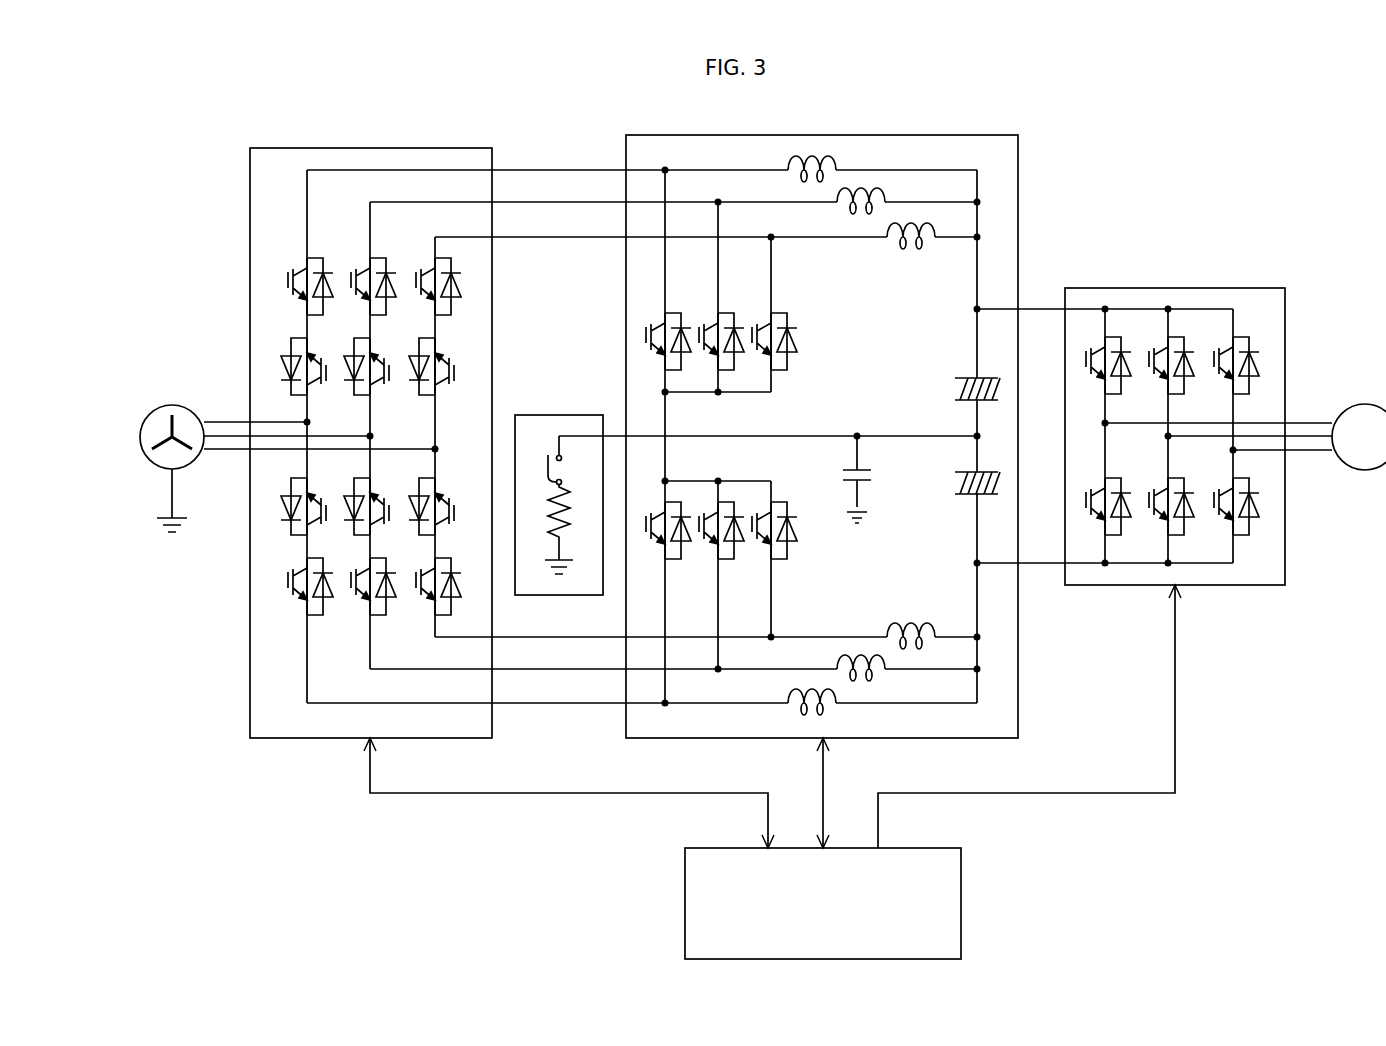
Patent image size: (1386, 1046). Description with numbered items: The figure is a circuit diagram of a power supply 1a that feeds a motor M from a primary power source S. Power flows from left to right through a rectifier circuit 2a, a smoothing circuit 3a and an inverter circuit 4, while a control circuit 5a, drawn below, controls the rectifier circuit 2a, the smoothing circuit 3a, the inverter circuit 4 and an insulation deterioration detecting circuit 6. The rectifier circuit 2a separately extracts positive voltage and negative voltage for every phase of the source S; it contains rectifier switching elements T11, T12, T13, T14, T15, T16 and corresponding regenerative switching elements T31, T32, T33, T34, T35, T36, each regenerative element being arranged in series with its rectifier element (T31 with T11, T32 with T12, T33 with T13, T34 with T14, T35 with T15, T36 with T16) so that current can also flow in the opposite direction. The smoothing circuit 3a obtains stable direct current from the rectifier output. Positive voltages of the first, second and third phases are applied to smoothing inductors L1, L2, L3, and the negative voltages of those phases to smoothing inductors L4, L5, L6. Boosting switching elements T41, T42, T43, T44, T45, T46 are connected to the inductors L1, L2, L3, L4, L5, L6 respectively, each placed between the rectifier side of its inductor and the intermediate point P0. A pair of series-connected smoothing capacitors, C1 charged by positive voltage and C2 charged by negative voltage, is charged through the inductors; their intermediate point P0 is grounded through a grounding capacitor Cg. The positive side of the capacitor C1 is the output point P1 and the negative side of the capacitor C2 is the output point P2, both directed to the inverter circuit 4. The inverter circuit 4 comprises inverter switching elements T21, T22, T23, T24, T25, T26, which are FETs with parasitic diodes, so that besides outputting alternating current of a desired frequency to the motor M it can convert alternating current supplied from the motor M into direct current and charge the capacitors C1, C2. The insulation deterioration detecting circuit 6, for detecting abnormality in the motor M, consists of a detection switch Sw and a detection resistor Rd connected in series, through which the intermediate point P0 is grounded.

The power supply 1a is at (1172, 173).
The rectifier circuit 2a is at (496, 156).
The smoothing circuit 3a is at (1022, 152).
The inverter circuit 4 is at (1259, 286).
The control circuit 5a is at (963, 888).
The insulation deterioration detecting circuit 6 is at (564, 413).
The primary power source S is at (170, 405).
The motor M is at (1362, 405).
The detection switch Sw is at (546, 466).
The detection resistor Rd is at (554, 520).
The rectifier switching element T11 is at (326, 381).
The rectifier switching element T12 is at (389, 381).
The rectifier switching element T13 is at (454, 381).
The rectifier switching element T14 is at (326, 505).
The rectifier switching element T15 is at (389, 505).
The rectifier switching element T16 is at (452, 505).
The inverter switching element T21 is at (1122, 384).
The inverter switching element T22 is at (1185, 384).
The inverter switching element T23 is at (1250, 384).
The inverter switching element T24 is at (1122, 526).
The inverter switching element T25 is at (1185, 526).
The inverter switching element T26 is at (1250, 526).
The regenerative switching element T31 is at (288, 272).
The regenerative switching element T32 is at (351, 272).
The regenerative switching element T33 is at (416, 272).
The regenerative switching element T34 is at (288, 588).
The regenerative switching element T35 is at (351, 588).
The regenerative switching element T36 is at (416, 588).
The boosting switching element T41 is at (676, 313).
The boosting switching element T42 is at (729, 313).
The boosting switching element T43 is at (782, 313).
The boosting switching element T44 is at (677, 561).
The boosting switching element T45 is at (730, 561).
The boosting switching element T46 is at (783, 561).
The smoothing inductor L1 is at (790, 171).
The smoothing inductor L2 is at (840, 203).
The smoothing inductor L3 is at (890, 238).
The smoothing inductor L4 is at (788, 703).
The smoothing inductor L5 is at (838, 669).
The smoothing inductor L6 is at (888, 637).
The smoothing capacitor C1 is at (958, 378).
The smoothing capacitor C2 is at (958, 494).
The grounding capacitor Cg is at (846, 483).
The intermediate point P0 is at (975, 434).
The point P1 is at (975, 310).
The point P2 is at (975, 563).